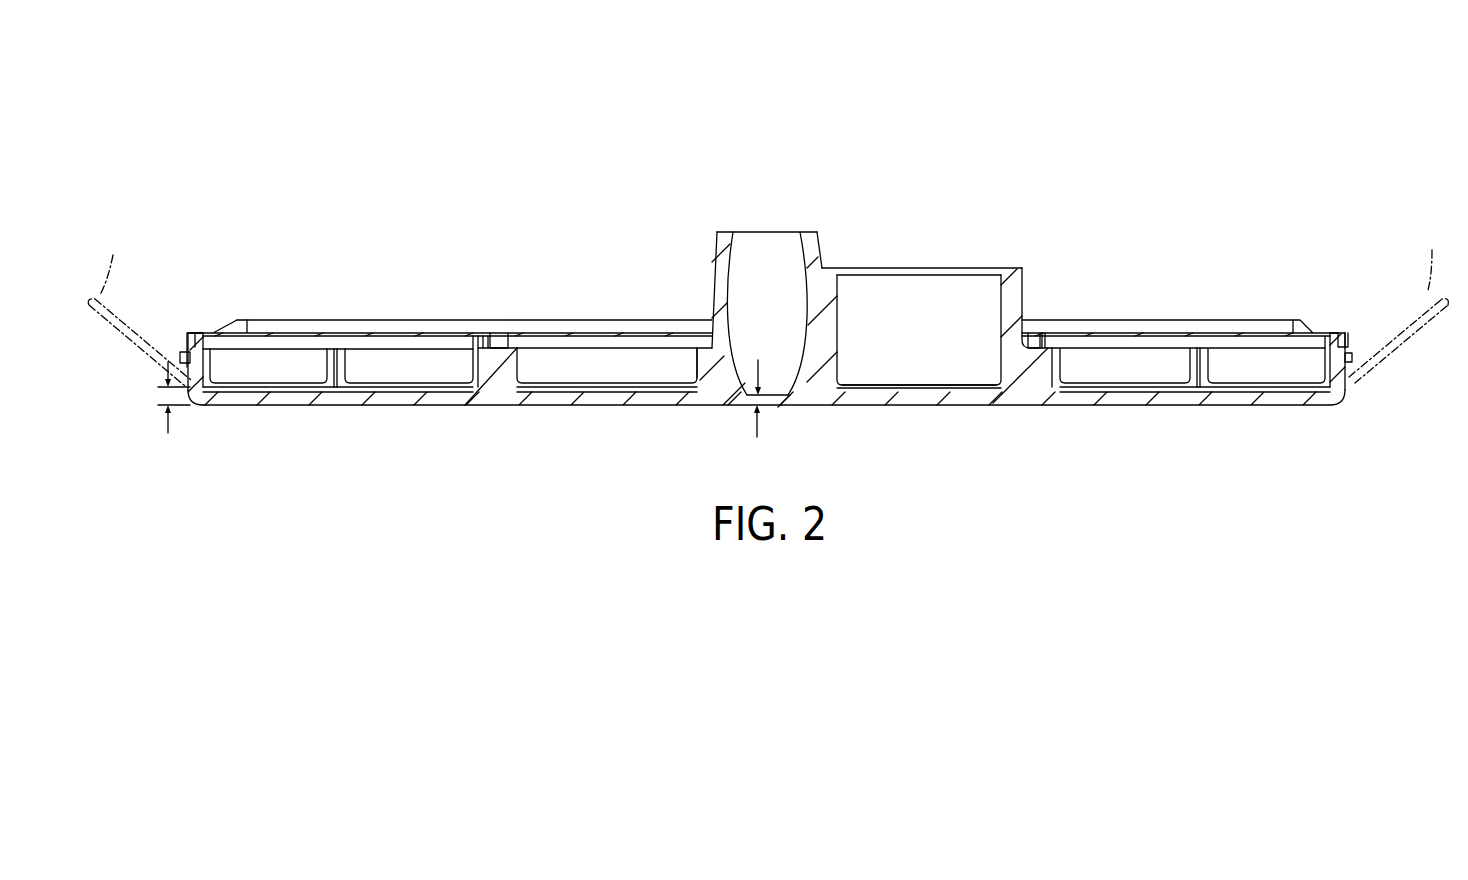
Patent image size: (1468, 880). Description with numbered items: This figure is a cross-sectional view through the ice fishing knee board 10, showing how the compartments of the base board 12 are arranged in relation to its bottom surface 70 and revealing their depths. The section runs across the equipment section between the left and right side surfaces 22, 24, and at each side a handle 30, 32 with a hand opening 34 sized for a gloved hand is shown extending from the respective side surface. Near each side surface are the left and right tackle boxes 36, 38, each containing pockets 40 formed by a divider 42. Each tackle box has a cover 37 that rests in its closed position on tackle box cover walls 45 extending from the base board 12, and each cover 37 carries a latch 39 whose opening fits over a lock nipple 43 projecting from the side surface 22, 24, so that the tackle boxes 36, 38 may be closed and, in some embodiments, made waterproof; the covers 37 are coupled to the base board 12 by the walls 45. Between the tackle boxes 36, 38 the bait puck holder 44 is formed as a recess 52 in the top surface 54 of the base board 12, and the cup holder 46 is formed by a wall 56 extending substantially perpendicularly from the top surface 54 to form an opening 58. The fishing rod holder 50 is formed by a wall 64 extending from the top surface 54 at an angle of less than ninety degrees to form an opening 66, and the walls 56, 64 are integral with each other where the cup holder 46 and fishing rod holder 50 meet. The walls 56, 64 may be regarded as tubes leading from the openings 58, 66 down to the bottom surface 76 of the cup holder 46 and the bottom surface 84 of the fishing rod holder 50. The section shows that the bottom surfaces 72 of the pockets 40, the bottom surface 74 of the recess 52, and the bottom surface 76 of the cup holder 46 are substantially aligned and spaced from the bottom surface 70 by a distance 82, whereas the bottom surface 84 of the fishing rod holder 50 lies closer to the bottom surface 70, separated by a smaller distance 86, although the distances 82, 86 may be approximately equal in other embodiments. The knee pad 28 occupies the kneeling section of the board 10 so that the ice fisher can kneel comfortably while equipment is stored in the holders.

The ice fishing knee board 10 is at (348, 86).
The base board 12 is at (246, 395).
The left side surface 22 is at (1366, 370).
The right side surface 24 is at (168, 362).
The knee pad 28 is at (680, 327).
The left side handle 30 is at (1432, 255).
The right side handle 32 is at (113, 260).
The hand opening 34 is at (136, 297).
The left tackle box 36 is at (1306, 297).
The tackle box cover 37 is at (390, 333).
The right tackle box 38 is at (235, 287).
The latch 39 is at (186, 333).
The pocket 40 is at (355, 349).
The divider 42 is at (338, 368).
The lock nipple 43 is at (178, 350).
The bait puck holder 44 is at (585, 375).
The tackle box cover wall 45 is at (428, 346).
The cup holder 46 is at (952, 368).
The fishing rod holder 50 is at (747, 366).
The recess 52 is at (577, 349).
The top surface 54 is at (512, 349).
The wall 56 is at (1008, 268).
The opening 58 is at (929, 267).
The wall 64 is at (810, 232).
The opening 66 is at (767, 227).
The bottom surface 70 is at (427, 403).
The bottom surface 72 is at (286, 388).
The bottom surface 74 is at (652, 388).
The bottom surface 76 is at (918, 388).
The distance 82 is at (168, 430).
The bottom surface 84 is at (770, 392).
The distance 86 is at (757, 437).